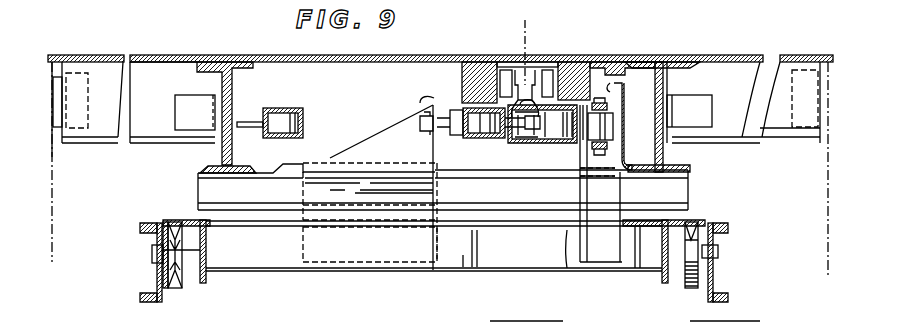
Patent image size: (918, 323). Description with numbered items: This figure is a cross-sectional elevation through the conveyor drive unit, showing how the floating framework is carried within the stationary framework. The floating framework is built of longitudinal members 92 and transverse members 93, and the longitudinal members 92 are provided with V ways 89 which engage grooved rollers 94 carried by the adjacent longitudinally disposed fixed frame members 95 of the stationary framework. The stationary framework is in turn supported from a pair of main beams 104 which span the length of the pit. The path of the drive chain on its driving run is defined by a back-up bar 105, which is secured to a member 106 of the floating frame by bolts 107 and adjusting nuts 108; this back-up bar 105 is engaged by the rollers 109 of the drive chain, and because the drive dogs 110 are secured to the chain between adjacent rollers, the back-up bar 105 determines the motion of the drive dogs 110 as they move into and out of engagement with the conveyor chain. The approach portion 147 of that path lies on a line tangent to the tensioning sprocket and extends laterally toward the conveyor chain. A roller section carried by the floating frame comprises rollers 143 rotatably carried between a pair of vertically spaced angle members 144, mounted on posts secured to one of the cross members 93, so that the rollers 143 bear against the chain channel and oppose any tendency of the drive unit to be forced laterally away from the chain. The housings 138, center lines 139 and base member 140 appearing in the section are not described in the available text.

The V ways 89 is at (175, 222).
The longitudinal members 92 is at (206, 282).
The transverse members 93 is at (545, 262).
The grooved rollers 94 is at (180, 278).
The fixed frame members 95 is at (157, 273).
The main beams 104 is at (235, 97).
The back-up bar 105 is at (450, 88).
The member of the floating frame 106 is at (358, 154).
The bolts 107 is at (428, 100).
The adjusting nuts 108 is at (420, 121).
The rollers 109 is at (307, 122).
The drive dogs 110 is at (249, 120).
The housing 138 is at (147, 138).
The center line 139 is at (52, 227).
The base member 140 is at (678, 193).
The rollers 143 is at (605, 134).
The angle members 144 is at (606, 90).
The approach portion 147 is at (300, 108).